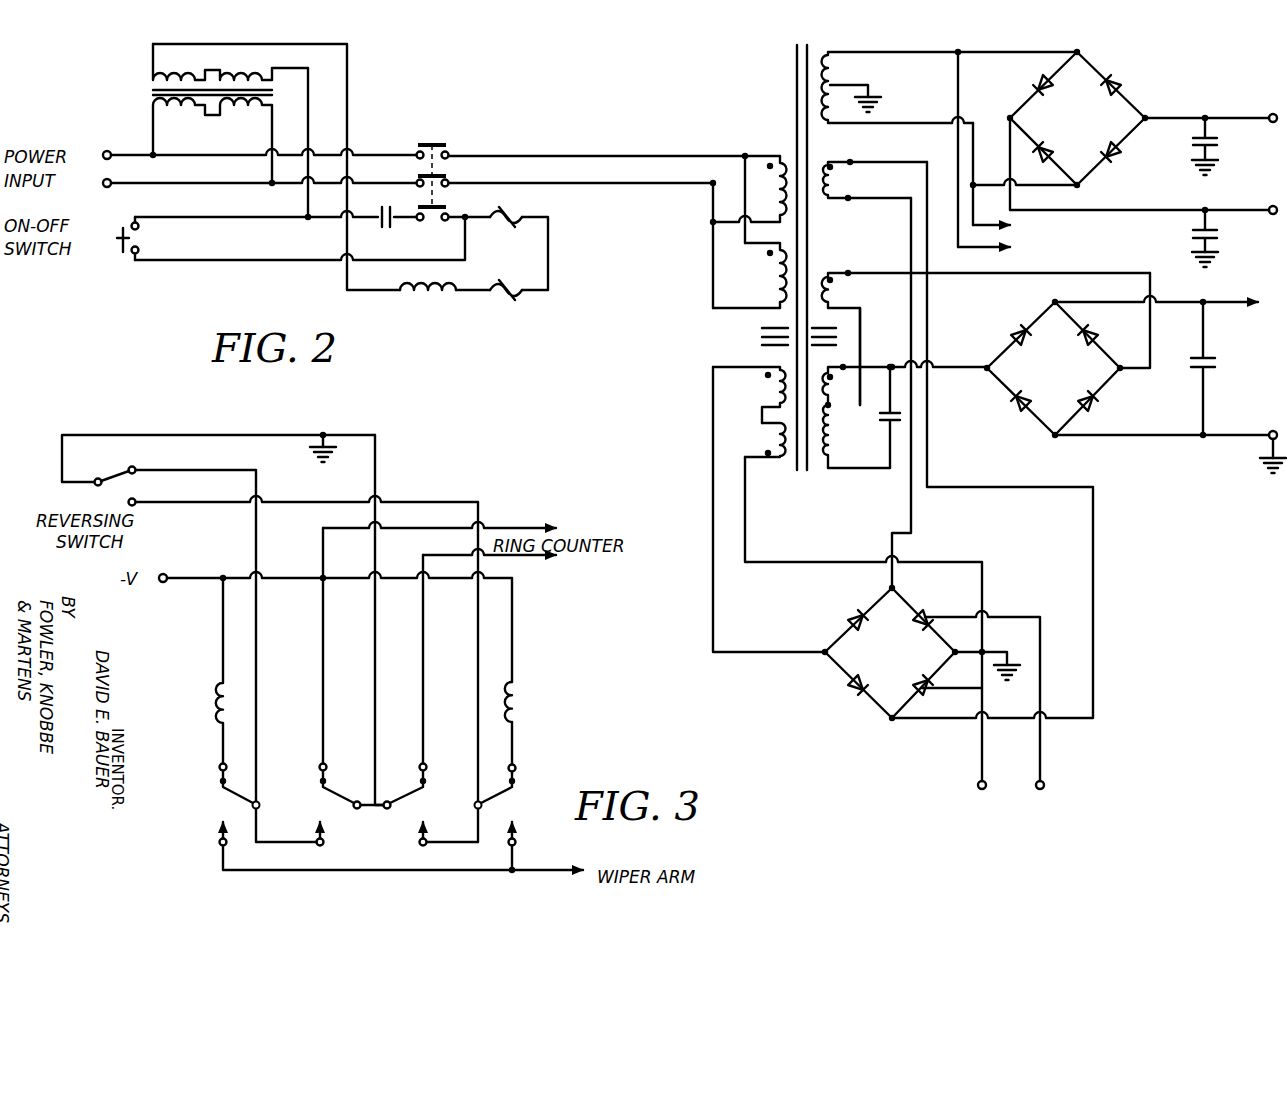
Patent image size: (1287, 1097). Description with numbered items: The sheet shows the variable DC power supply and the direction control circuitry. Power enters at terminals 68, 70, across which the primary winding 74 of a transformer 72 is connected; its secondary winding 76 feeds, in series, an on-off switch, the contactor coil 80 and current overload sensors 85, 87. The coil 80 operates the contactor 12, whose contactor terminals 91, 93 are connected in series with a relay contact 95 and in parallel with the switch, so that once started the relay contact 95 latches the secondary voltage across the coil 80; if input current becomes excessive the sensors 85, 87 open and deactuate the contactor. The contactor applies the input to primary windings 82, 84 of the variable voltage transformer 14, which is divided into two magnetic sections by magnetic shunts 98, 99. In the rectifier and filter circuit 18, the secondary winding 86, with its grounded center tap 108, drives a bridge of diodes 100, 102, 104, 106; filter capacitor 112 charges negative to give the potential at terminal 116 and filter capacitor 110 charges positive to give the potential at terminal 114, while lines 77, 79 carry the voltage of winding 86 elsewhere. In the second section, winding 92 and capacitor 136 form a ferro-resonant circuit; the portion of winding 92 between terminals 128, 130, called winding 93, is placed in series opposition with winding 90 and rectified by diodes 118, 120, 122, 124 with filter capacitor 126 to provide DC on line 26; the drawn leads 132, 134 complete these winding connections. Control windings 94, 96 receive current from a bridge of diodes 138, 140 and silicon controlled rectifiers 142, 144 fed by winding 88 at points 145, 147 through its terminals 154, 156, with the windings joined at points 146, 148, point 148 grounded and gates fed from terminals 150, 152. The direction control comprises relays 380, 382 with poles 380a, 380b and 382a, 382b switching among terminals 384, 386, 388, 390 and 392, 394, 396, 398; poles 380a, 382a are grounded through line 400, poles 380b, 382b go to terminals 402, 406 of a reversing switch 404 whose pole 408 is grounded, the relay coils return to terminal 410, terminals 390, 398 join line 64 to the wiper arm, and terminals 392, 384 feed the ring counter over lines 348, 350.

In FIG. 2, the contactor 12 is at (431, 176).
In FIG. 2, the variable voltage transformer 14 is at (931, 257).
In FIG. 2, the rectifier and filter circuit 18 is at (1248, 366).
In FIG. 2, the line 26 is at (1228, 302).
In FIG. 3, the line 64 is at (545, 874).
In FIG. 2, the terminal 68 is at (115, 140).
In FIG. 2, the terminal 70 is at (110, 188).
In FIG. 2, the transformer 72 is at (200, 130).
In FIG. 2, the primary winding 74 is at (183, 120).
In FIG. 2, the secondary winding 76 is at (262, 75).
In FIG. 2, the line 77 is at (1000, 223).
In FIG. 2, the line 79 is at (1012, 240).
In FIG. 2, the contactor coil 80 is at (440, 296).
In FIG. 2, the primary winding 82 is at (774, 152).
In FIG. 2, the primary winding 84 is at (768, 270).
In FIG. 2, the current overload sensor 85 is at (506, 228).
In FIG. 2, the secondary winding 86 is at (845, 73).
In FIG. 2, the current overload sensor 87 is at (508, 300).
In FIG. 2, the winding 88 is at (840, 178).
In FIG. 2, the winding 90 is at (838, 290).
In FIG. 2, the contactor terminal 91 is at (444, 222).
In FIG. 2, the winding 92 is at (838, 452).
In FIG. 2, the contactor terminal 93 is at (419, 222).
In FIG. 2, the control winding 94 is at (762, 393).
In FIG. 2, the relay contact 95 is at (384, 232).
In FIG. 2, the control winding 96 is at (762, 436).
In FIG. 2, the magnetic shunt 98 is at (755, 333).
In FIG. 2, the magnetic shunt 99 is at (830, 318).
In FIG. 2, the diode 100 is at (1118, 78).
In FIG. 2, the diode 102 is at (1040, 78).
In FIG. 2, the diode 104 is at (1052, 146).
In FIG. 2, the diode 106 is at (1118, 158).
In FIG. 2, the center tap 108 is at (875, 92).
In FIG. 2, the filter capacitor 110 is at (1219, 232).
In FIG. 2, the filter capacitor 112 is at (1219, 140).
In FIG. 2, the terminal 114 is at (1274, 205).
In FIG. 2, the terminal 116 is at (1273, 112).
In FIG. 2, the diode 118 is at (1014, 326).
In FIG. 2, the diode 120 is at (1094, 334).
In FIG. 2, the diode 122 is at (1095, 406).
In FIG. 2, the diode 124 is at (1012, 405).
In FIG. 2, the filter capacitor 126 is at (1218, 366).
In FIG. 2, the terminal 128 is at (843, 365).
In FIG. 2, the terminal 130 is at (835, 410).
In FIG. 2, the connecting lead 132 is at (862, 308).
In FIG. 2, the winding tap 134 is at (848, 271).
In FIG. 2, the capacitor 136 is at (854, 438).
In FIG. 2, the diode 138 is at (850, 612).
In FIG. 2, the diode 140 is at (848, 692).
In FIG. 2, the silicon controlled rectifier 142 is at (926, 610).
In FIG. 2, the silicon controlled rectifier 144 is at (917, 678).
In FIG. 2, the point 145 is at (896, 588).
In FIG. 2, the point 146 is at (822, 656).
In FIG. 2, the point 147 is at (888, 722).
In FIG. 2, the point 148 is at (988, 650).
In FIG. 2, the terminal 150 is at (1045, 785).
In FIG. 2, the terminal 152 is at (977, 785).
In FIG. 2, the terminal 154 is at (850, 160).
In FIG. 2, the terminal 156 is at (848, 200).
In FIG. 3, the line 348 is at (502, 528).
In FIG. 3, the line 350 is at (525, 557).
In FIG. 3, the relay 380 is at (514, 688).
In FIG. 3, the pole 380a is at (404, 786).
In FIG. 3, the pole 380b is at (260, 806).
In FIG. 3, the relay 382 is at (212, 686).
In FIG. 3, the pole 382a is at (356, 810).
In FIG. 3, the pole 382b is at (474, 804).
In FIG. 3, the terminal 384 is at (444, 760).
In FIG. 3, the terminal 386 is at (425, 847).
In FIG. 3, the terminal 388 is at (218, 767).
In FIG. 3, the terminal 390 is at (218, 843).
In FIG. 3, the terminal 392 is at (318, 766).
In FIG. 3, the terminal 394 is at (322, 847).
In FIG. 3, the terminal 396 is at (516, 768).
In FIG. 3, the terminal 398 is at (516, 842).
In FIG. 3, the line 400 is at (378, 655).
In FIG. 3, the terminal 402 is at (136, 466).
In FIG. 3, the reversing switch 404 is at (92, 485).
In FIG. 3, the terminal 406 is at (136, 498).
In FIG. 3, the pole 408 is at (110, 476).
In FIG. 3, the terminal 410 is at (160, 583).